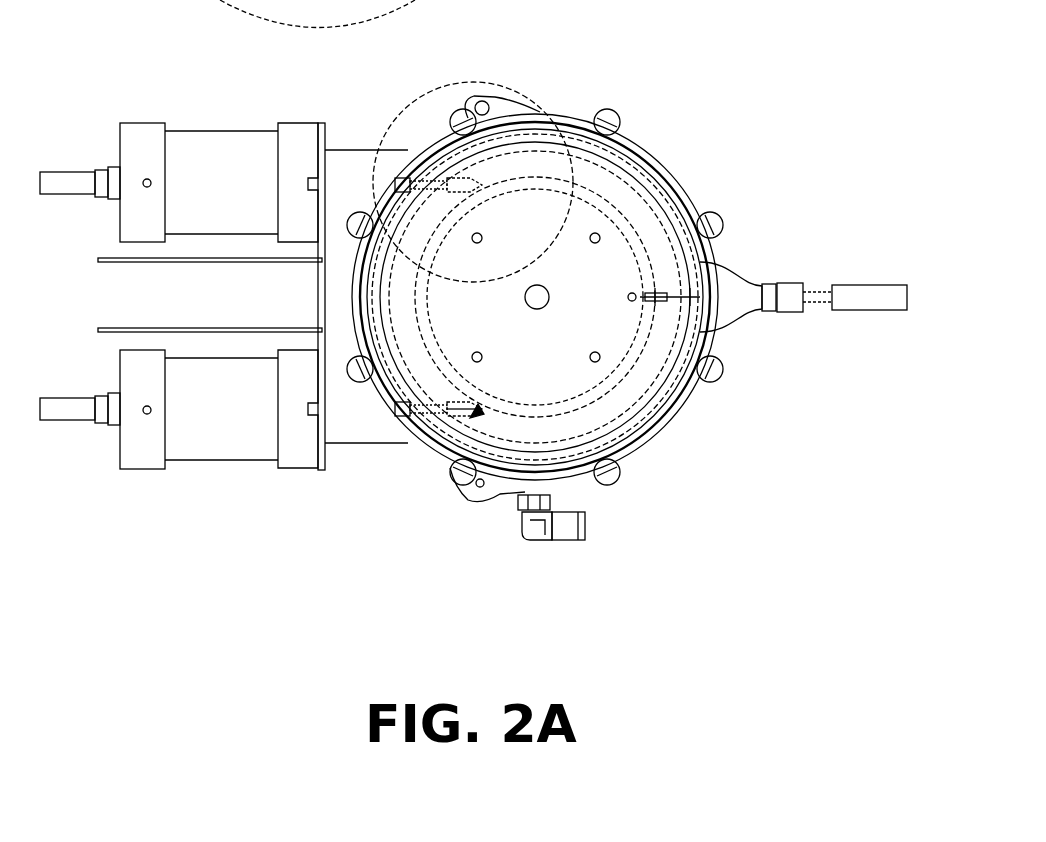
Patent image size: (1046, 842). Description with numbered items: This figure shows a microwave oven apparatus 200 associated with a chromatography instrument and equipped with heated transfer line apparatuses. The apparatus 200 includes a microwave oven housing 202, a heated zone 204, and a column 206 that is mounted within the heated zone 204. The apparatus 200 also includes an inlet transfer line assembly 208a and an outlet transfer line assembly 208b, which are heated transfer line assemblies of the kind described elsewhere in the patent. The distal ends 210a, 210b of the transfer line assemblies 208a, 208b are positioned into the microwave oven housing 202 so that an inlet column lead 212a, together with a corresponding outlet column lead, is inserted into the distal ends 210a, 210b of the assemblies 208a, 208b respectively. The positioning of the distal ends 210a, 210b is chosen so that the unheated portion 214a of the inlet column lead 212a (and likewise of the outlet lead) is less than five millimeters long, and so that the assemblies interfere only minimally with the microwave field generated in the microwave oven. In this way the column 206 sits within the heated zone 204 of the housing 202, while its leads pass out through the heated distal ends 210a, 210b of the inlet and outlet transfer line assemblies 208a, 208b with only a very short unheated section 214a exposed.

The microwave oven apparatus 200 is at (564, 578).
The microwave oven housing 202 is at (684, 418).
The heated zone 204 is at (563, 297).
The column 206 is at (623, 220).
The inlet transfer line assembly 208a is at (207, 484).
The outlet transfer line assembly 208b is at (208, 114).
The distal end of inlet transfer line assembly 210a is at (448, 400).
The distal end of outlet transfer line assembly 210b is at (455, 195).
The inlet column lead 212a is at (478, 412).
The unheated portion of inlet column lead 214a is at (476, 410).